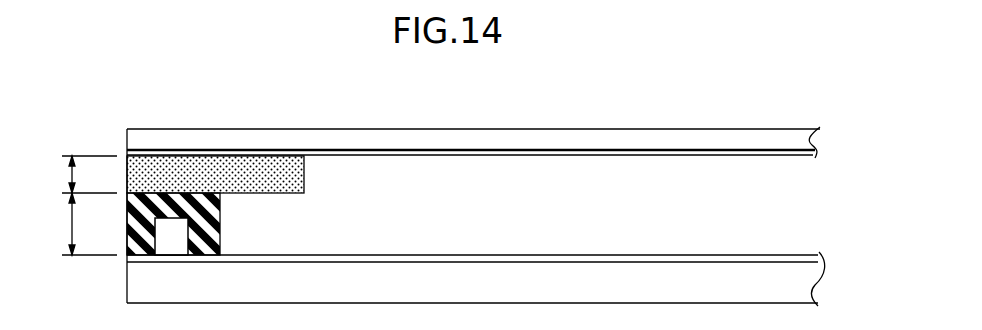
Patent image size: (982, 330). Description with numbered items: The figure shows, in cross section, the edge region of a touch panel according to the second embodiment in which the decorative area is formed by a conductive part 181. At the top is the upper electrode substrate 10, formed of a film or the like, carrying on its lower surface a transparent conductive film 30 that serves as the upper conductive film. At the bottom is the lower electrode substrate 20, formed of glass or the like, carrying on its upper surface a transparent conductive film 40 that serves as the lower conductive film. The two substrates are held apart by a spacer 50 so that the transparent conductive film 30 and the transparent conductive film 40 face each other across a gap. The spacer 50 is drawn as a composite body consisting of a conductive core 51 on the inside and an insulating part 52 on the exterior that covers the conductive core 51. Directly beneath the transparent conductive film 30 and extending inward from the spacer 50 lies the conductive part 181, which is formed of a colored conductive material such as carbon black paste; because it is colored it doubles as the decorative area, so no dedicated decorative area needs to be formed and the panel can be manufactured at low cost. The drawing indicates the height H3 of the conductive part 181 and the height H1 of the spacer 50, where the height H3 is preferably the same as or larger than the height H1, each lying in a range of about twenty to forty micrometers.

The upper electrode substrate 10 is at (807, 143).
The transparent conductive film 30 is at (810, 156).
The conductive part 181 is at (217, 175).
The spacer 50 is at (224, 240).
The insulating part 52 is at (141, 249).
The conductive core 51 is at (172, 246).
The transparent conductive film 40 is at (807, 259).
The lower electrode substrate 20 is at (808, 283).
The height of the conductive part H3 is at (77, 174).
The height of the spacer H1 is at (77, 224).